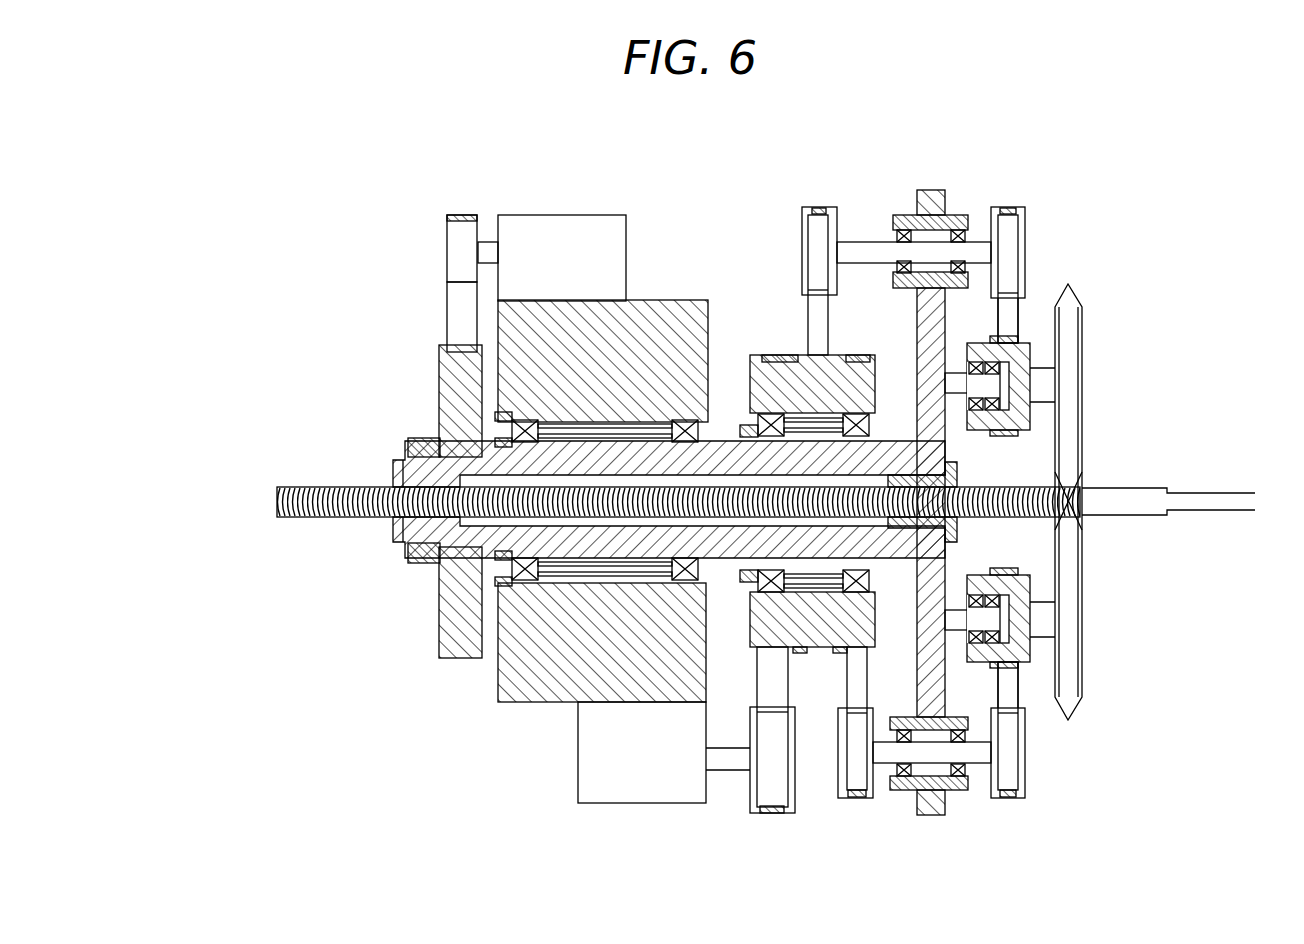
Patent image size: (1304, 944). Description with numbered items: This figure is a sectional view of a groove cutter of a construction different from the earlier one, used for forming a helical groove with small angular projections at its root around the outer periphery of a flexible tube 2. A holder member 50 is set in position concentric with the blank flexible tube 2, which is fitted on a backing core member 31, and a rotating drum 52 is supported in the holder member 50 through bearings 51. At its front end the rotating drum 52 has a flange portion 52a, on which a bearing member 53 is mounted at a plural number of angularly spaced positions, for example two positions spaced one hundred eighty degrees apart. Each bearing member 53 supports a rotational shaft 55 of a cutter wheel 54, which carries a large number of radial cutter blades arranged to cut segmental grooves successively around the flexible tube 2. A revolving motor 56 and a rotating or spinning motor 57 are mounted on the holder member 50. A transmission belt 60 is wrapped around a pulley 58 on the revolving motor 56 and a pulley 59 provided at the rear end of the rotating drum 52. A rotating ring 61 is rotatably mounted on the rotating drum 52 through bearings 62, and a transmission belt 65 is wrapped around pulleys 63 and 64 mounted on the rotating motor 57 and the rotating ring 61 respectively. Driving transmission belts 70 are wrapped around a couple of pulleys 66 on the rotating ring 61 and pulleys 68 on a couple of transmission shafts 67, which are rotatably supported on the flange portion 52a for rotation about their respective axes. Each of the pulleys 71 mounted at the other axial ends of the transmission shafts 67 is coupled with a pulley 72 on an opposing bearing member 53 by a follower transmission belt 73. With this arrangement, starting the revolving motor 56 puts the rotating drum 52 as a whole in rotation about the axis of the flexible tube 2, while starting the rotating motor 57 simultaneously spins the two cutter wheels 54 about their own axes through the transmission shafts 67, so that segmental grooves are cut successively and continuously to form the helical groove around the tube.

The flexible tube 2 is at (277, 495).
The backing core member 31 is at (1225, 500).
The holder member 50 is at (640, 318).
The bearings 51 is at (685, 583).
The rotating drum 52 is at (580, 455).
The flange portion 52a is at (930, 566).
The bearing member 53 is at (1023, 383).
The cutter wheel 54 is at (1075, 348).
The rotational shaft 55 is at (952, 378).
The revolving motor 56 is at (547, 230).
The rotating motor 57 is at (590, 778).
The pulley 58 is at (455, 252).
The pulley 59 is at (450, 405).
The transmission belt 60 is at (453, 316).
The rotating ring 61 is at (750, 370).
The bearings 62 is at (848, 437).
The pulley 63 is at (750, 790).
The pulley 64 is at (770, 655).
The transmission belt 65 is at (775, 358).
The pulleys 66 is at (865, 357).
The transmission shafts 67 is at (890, 248).
The pulleys 68 is at (820, 228).
The driving transmission belts 70 is at (817, 317).
The pulleys 71 is at (1010, 260).
The pulley 72 is at (1005, 343).
The follower transmission belt 73 is at (1008, 228).